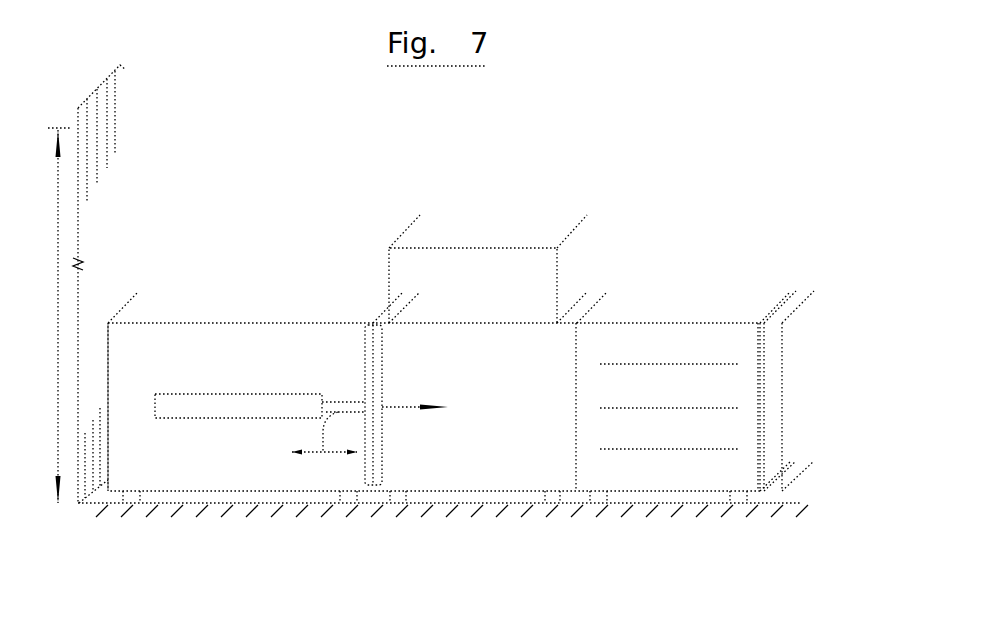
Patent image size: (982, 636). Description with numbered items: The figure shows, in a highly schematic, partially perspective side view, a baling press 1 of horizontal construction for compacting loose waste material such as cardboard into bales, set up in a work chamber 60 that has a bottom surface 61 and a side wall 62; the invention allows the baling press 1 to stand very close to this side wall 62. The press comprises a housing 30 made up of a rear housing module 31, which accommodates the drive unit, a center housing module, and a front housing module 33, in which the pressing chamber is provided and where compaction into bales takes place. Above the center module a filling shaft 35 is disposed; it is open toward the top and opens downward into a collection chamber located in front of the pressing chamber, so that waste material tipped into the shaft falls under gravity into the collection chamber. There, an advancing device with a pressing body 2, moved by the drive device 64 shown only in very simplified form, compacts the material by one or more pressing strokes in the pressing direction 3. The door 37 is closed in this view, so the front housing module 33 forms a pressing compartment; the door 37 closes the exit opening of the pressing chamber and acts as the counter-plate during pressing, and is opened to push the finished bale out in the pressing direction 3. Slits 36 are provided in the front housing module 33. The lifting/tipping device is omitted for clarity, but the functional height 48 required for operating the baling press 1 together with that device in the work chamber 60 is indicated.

The baling press 1 is at (242, 272).
The pressing body 2 is at (405, 459).
The pressing direction 3 is at (392, 410).
The housing 30 is at (299, 292).
The rear housing module 31 is at (210, 458).
The front housing module 33 is at (687, 465).
The filling shaft 35 is at (516, 212).
The slits 36 is at (710, 447).
The door 37 is at (772, 387).
The functional height 48 is at (57, 430).
The work chamber 60 is at (168, 248).
The bottom surface 61 is at (792, 502).
The side wall 62 is at (107, 138).
The drive device 64 is at (238, 420).